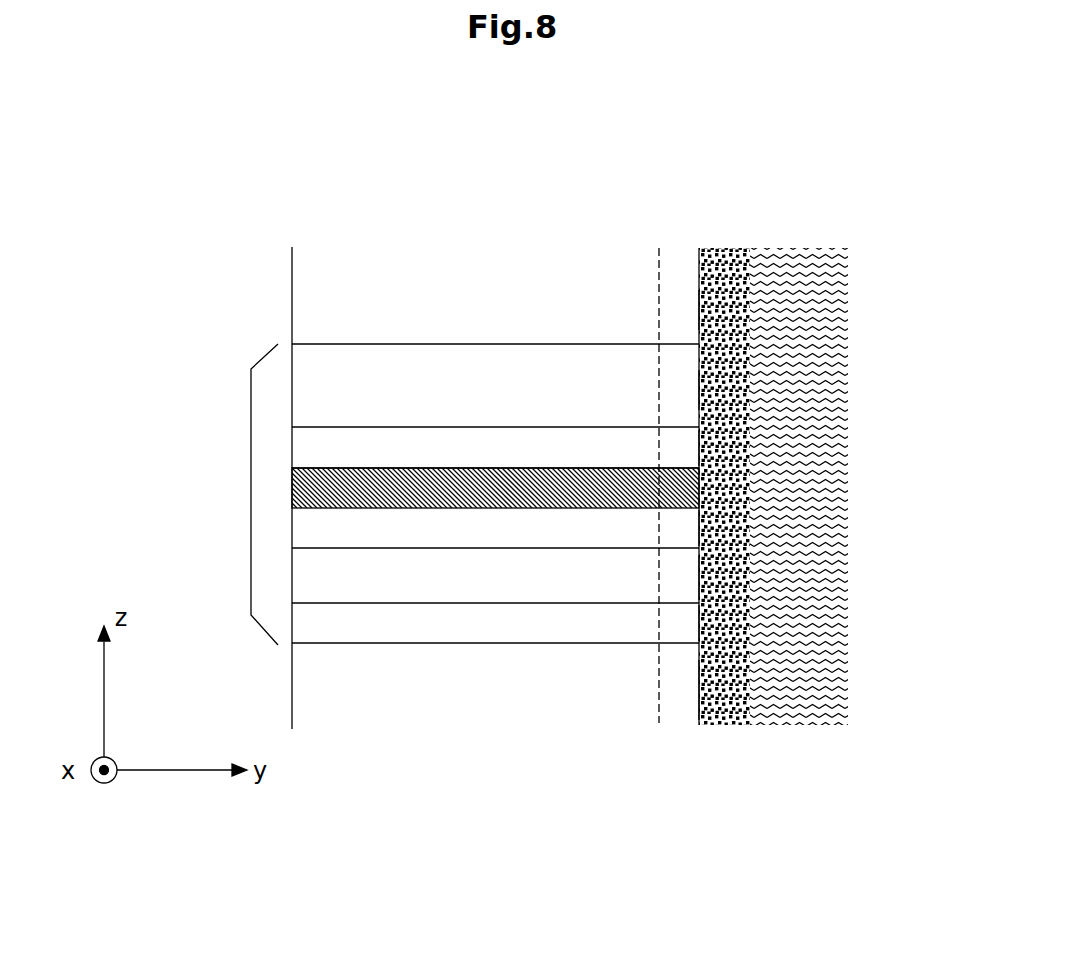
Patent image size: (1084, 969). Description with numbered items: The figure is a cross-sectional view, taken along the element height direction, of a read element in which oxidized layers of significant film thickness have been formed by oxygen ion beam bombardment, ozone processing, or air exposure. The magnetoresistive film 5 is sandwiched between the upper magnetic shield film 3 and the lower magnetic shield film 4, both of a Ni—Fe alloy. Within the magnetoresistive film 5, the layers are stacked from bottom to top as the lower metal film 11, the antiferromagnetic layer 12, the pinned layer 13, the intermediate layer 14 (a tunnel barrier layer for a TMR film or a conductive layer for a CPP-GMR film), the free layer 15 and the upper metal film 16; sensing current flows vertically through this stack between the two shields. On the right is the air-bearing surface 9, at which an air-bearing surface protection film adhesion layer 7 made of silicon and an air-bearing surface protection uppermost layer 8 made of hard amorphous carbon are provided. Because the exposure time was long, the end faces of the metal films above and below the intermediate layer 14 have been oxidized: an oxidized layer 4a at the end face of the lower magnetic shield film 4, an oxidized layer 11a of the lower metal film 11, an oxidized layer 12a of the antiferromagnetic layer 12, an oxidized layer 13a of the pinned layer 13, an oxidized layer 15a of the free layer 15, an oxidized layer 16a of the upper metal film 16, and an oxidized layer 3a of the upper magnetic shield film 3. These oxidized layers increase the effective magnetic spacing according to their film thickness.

The upper magnetic shield film 3 is at (384, 315).
The lower magnetic shield film 4 is at (417, 698).
The magnetoresistive film 5 is at (251, 501).
The air-bearing surface protection film adhesion layer 7 is at (737, 272).
The air-bearing surface protection uppermost layer 8 is at (800, 270).
The air-bearing surface 9 is at (699, 287).
The lower metal film 11 is at (632, 628).
The antiferromagnetic layer 12 is at (558, 580).
The pinned layer 13 is at (483, 537).
The intermediate layer 14 is at (625, 487).
The free layer 15 is at (555, 450).
The upper metal film 16 is at (475, 405).
The oxidized layer of the upper magnetic shield film 3a is at (690, 319).
The oxidized layer of the lower magnetic shield film 4a is at (690, 692).
The oxidized layer of the lower metal layer 11a is at (690, 627).
The oxidized layer of the antiferromagnetic layer 12a is at (690, 580).
The oxidized layer of the pinned layer 13a is at (690, 527).
The oxidized layer of the free layer 15a is at (690, 447).
The oxidized layer of the upper metal layer 16a is at (690, 392).